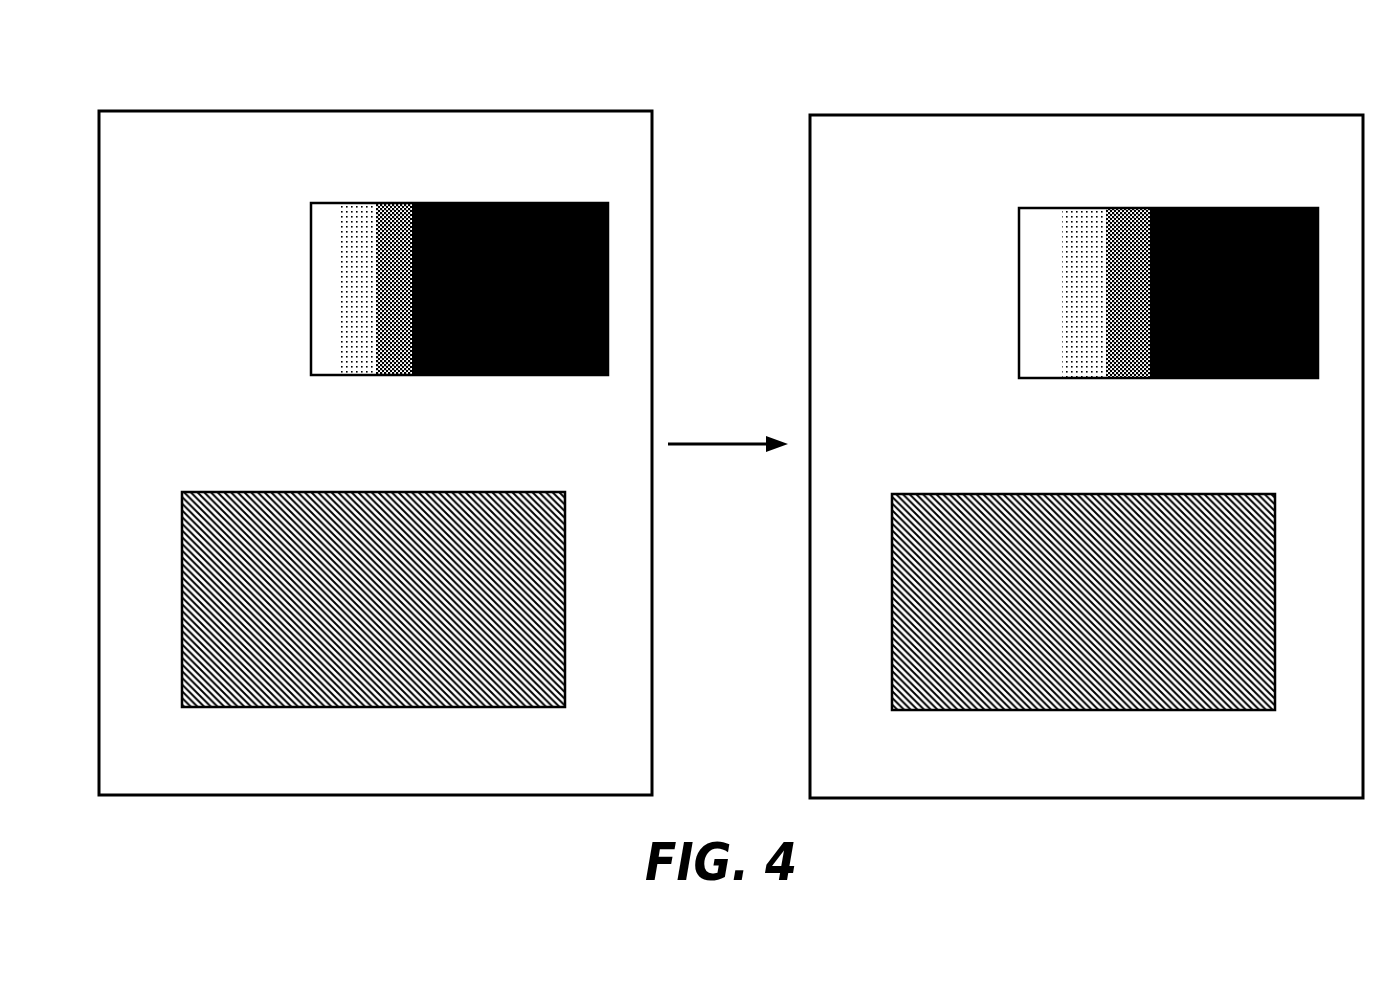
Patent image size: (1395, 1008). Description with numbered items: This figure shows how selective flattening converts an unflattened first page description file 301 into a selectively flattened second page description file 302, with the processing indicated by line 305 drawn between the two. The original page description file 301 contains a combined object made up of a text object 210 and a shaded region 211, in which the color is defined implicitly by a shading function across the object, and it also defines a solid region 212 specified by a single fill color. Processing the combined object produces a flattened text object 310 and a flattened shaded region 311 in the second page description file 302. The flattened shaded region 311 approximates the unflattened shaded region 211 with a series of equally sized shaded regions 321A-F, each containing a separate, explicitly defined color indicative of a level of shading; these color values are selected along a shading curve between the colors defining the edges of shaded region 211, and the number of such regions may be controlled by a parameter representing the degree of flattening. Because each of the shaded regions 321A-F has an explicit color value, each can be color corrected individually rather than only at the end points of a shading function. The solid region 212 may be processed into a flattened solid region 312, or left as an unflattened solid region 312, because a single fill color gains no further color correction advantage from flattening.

The unflattened first page description file 301 is at (339, 111).
The selectively flattened second page description file 302 is at (1048, 115).
The text object 210 is at (287, 332).
The shaded region 211 is at (458, 375).
The solid region 212 is at (370, 710).
The line 305 is at (742, 442).
The flattened text object 310 is at (995, 334).
The flattened shaded region 311 is at (1168, 284).
The solid region 312 is at (1080, 713).
The shaded regions 321A-F is at (1318, 202).